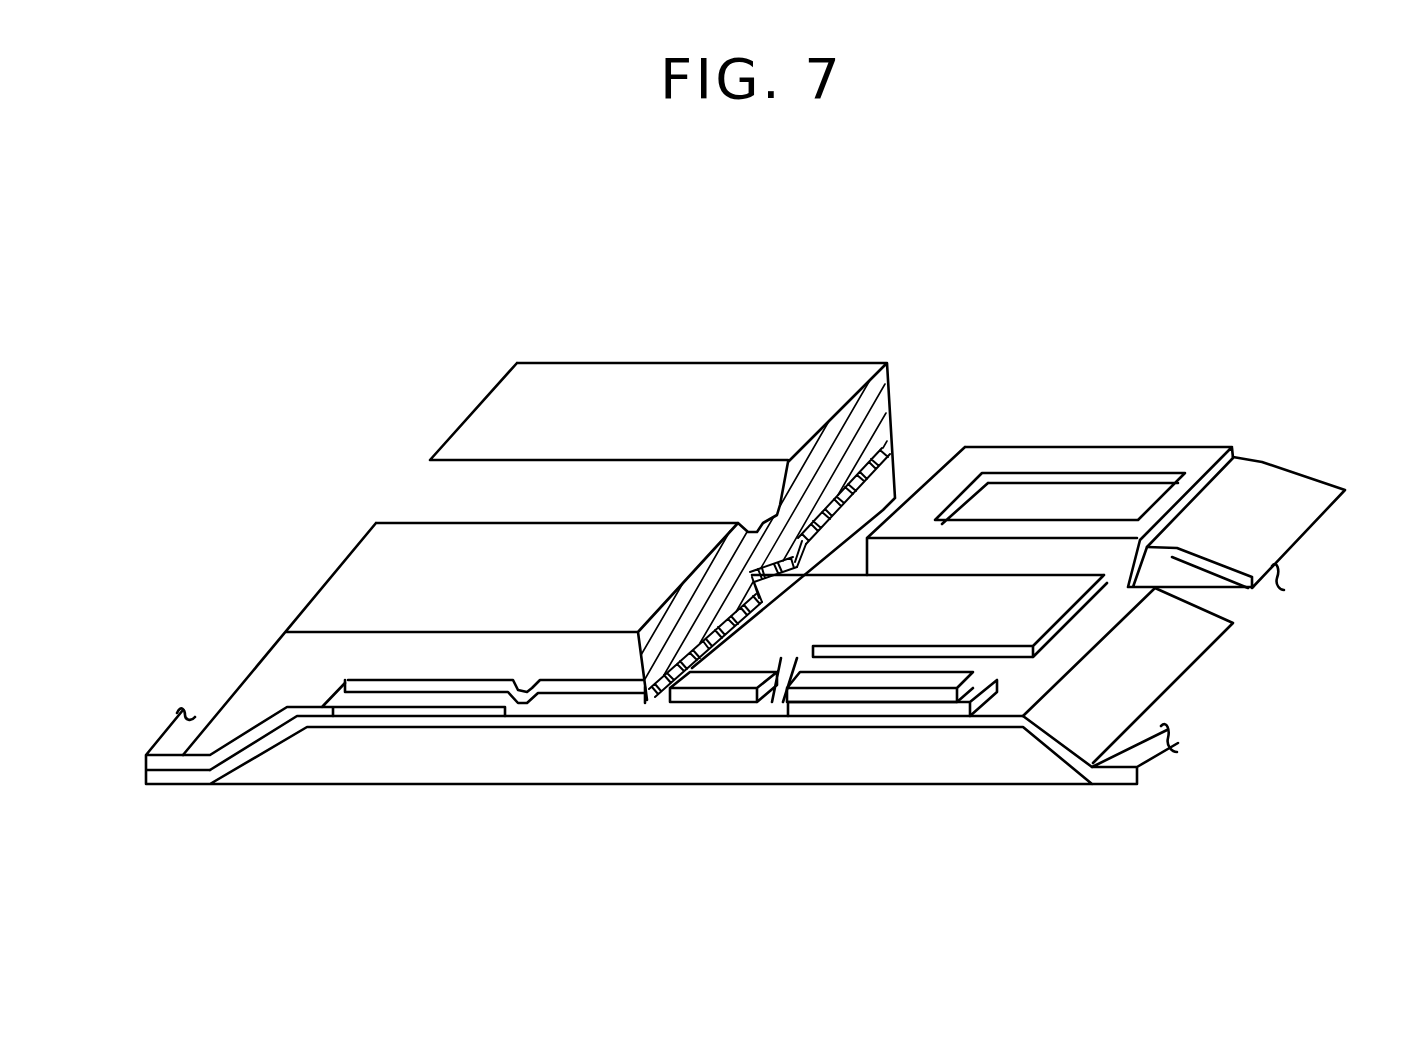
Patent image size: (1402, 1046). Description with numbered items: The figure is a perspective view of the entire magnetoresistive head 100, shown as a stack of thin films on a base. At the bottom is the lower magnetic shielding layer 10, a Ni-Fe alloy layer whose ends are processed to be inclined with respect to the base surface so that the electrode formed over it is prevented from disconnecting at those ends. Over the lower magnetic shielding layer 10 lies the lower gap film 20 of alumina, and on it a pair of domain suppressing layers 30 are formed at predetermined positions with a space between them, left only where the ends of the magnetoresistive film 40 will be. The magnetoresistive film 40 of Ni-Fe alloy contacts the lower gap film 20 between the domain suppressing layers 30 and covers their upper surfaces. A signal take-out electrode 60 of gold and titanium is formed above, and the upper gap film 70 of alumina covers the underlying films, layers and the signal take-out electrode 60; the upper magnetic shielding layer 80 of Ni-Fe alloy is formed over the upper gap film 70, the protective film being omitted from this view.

The magnetoresistive head 100 is at (853, 285).
The lower magnetic shielding layer 10 is at (870, 763).
The lower gap film 20 is at (895, 717).
The domain suppressing layers 30 is at (917, 708).
The magnetoresistive film 40 is at (913, 684).
The signal take-out electrode 60 is at (879, 605).
The upper gap film 70 is at (348, 684).
The upper magnetic shielding layer 80 is at (387, 577).